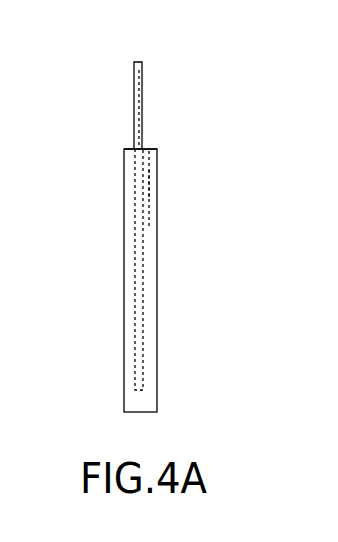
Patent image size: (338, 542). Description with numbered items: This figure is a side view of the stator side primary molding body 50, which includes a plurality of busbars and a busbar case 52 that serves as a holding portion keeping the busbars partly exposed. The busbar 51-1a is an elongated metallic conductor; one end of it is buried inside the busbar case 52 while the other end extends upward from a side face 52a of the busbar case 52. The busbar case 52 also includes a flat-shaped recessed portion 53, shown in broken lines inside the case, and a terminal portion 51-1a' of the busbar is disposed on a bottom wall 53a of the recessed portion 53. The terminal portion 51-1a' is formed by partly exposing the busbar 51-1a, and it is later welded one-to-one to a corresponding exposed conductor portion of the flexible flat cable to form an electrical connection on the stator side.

The stator side primary molding body 50 is at (172, 147).
The busbar case 52 is at (150, 341).
The side face 52a is at (151, 148).
The busbar 51-1a is at (80, 83).
The terminal portion 51-1a' is at (211, 269).
The recessed portion 53 is at (150, 228).
The bottom wall 53a is at (150, 183).